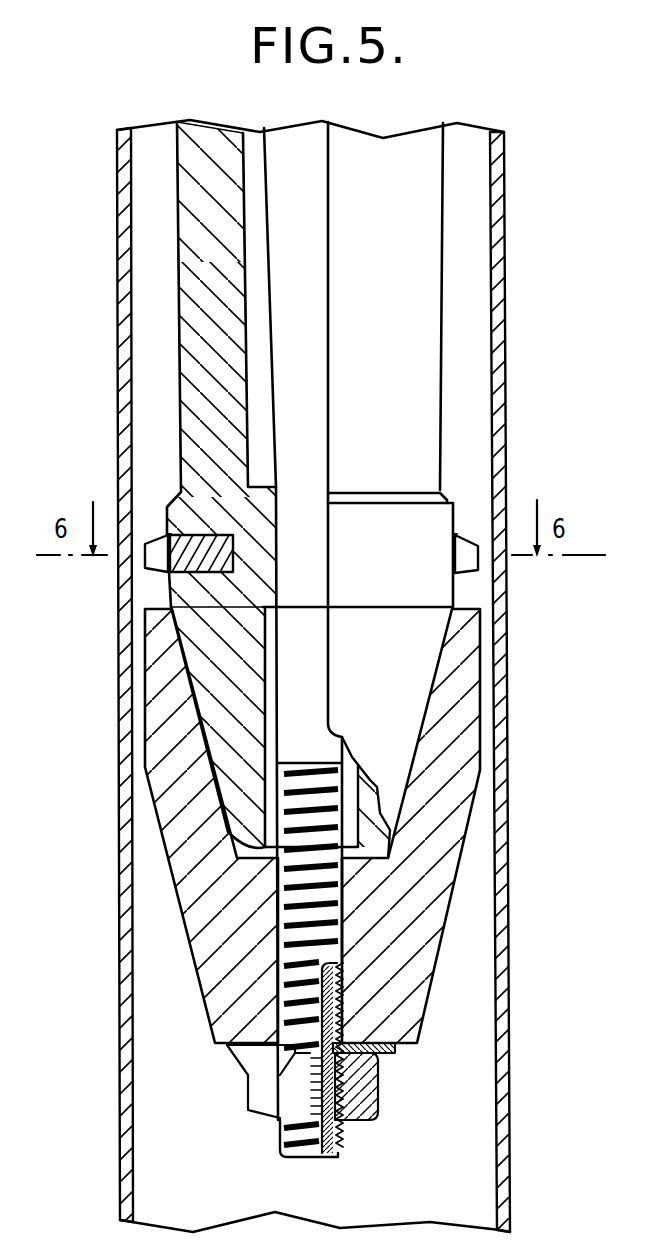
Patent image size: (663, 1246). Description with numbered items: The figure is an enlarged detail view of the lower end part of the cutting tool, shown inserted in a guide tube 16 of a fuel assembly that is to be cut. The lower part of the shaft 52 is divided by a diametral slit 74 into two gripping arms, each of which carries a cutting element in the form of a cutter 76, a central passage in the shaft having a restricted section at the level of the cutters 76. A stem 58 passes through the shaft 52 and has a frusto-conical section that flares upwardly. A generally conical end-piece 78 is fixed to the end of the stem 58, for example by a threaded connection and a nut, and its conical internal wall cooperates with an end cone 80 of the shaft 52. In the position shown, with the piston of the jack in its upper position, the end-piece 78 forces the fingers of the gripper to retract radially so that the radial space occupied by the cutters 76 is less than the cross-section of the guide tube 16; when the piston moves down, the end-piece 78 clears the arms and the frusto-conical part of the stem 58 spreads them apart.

The guide tube 16 is at (119, 166).
The shaft 52 is at (217, 273).
The stem 58 is at (285, 353).
The diametral slit 74 is at (308, 211).
The cutter 76 is at (155, 553).
The conical end-piece 78 is at (192, 812).
The end cone 80 is at (197, 682).